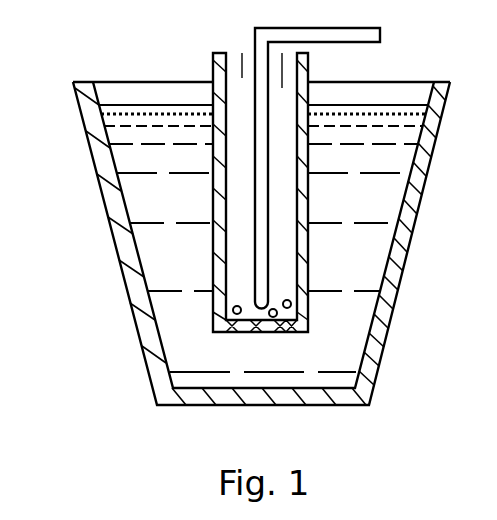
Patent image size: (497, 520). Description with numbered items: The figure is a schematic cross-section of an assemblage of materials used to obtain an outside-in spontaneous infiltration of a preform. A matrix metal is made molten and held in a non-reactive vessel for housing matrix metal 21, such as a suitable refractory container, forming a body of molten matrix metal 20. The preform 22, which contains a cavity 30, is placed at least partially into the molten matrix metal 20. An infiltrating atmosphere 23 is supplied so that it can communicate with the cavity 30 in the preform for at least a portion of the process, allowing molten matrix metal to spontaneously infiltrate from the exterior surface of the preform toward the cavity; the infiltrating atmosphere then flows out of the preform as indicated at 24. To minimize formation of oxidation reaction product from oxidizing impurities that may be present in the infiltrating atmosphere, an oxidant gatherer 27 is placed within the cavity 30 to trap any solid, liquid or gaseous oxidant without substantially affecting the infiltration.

The body of molten matrix metal 20 is at (368, 212).
The vessel for housing matrix metal 21 is at (118, 230).
The preform 22 is at (213, 93).
The infiltrating atmosphere 23 is at (383, 35).
The infiltrating atmosphere outflow 24 is at (242, 53).
The oxidant gatherer 27 is at (288, 308).
The cavity 30 is at (283, 250).